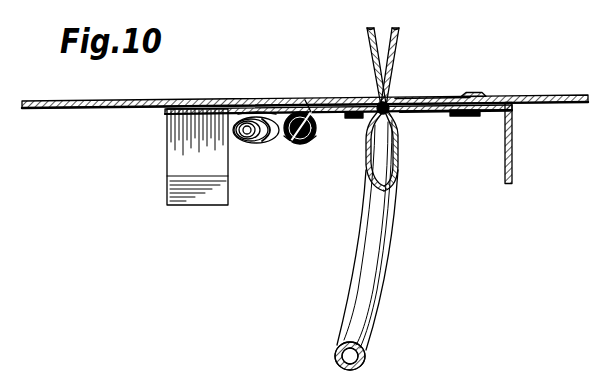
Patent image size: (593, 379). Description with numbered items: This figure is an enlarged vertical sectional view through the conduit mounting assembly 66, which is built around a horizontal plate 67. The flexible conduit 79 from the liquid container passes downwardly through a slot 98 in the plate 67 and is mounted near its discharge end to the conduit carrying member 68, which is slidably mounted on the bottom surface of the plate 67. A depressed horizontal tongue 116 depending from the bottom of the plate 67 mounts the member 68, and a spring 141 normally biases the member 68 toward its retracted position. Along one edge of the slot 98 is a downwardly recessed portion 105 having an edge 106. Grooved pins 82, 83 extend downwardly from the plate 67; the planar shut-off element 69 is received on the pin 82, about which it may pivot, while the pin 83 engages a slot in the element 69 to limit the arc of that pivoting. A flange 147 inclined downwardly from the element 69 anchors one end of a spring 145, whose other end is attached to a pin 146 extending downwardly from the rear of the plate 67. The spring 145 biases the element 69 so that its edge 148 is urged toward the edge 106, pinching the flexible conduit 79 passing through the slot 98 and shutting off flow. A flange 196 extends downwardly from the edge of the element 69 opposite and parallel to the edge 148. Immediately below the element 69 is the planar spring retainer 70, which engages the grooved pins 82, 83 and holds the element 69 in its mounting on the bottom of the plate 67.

The conduit mounting assembly 66 is at (83, 159).
The plate 67 is at (200, 101).
The conduit carrying member 68 is at (212, 113).
The planar shut-off element 69 is at (442, 118).
The planar spring retainer 70 is at (422, 118).
The flexible conduit 79 is at (380, 287).
The grooved pin 82 is at (472, 95).
The grooved pin 83 is at (347, 120).
The slot 98 is at (402, 98).
The downwardly recessed portion 105 is at (373, 98).
The edge 106 is at (381, 114).
The depressed horizontal tongue 116 is at (245, 113).
The spring 141 is at (262, 142).
The spring 145 is at (317, 142).
The pin 146 is at (305, 100).
The flange 147 is at (286, 140).
The edge 148 is at (392, 116).
The flange 196 is at (512, 157).